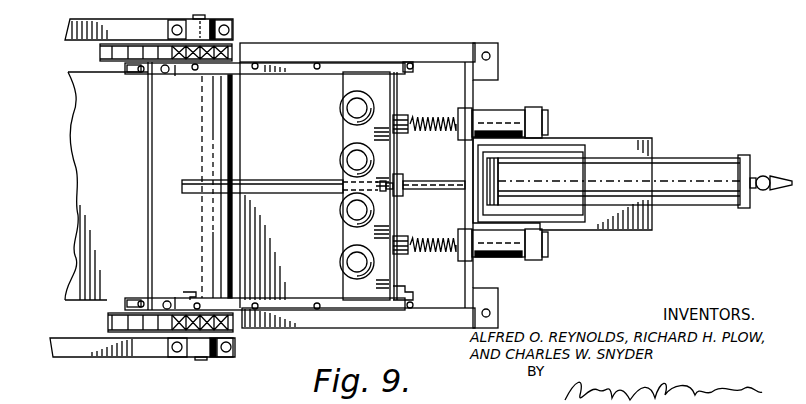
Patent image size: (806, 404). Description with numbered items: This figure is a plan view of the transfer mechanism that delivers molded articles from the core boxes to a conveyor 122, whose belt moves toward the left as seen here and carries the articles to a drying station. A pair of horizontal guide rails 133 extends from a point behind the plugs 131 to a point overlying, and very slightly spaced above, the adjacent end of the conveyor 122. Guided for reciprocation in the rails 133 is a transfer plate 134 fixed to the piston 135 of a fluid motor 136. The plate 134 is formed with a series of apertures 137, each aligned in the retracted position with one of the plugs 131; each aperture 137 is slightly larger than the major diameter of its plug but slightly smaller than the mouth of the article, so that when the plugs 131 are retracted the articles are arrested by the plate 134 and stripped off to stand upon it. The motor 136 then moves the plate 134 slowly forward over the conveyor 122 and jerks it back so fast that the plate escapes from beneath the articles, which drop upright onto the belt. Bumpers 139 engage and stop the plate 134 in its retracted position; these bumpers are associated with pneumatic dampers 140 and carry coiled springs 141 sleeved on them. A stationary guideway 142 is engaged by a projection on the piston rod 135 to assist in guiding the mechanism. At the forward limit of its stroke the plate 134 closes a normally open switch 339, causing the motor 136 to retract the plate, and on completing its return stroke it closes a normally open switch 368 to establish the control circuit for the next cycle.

The conveyor 122 is at (84, 240).
The plug 131 is at (345, 262).
The horizontal guide rails 133 is at (440, 55).
The transfer plate 134 is at (383, 223).
The piston 135 is at (430, 180).
The fluid motor 136 is at (670, 168).
The apertures 137 is at (363, 97).
The bumpers 139 is at (400, 118).
The pneumatic dampers 140 is at (510, 113).
The coiled springs 141 is at (440, 118).
The stationary guideway 142 is at (300, 178).
The normally open switch 339 is at (189, 293).
The normally open switch 368 is at (405, 290).